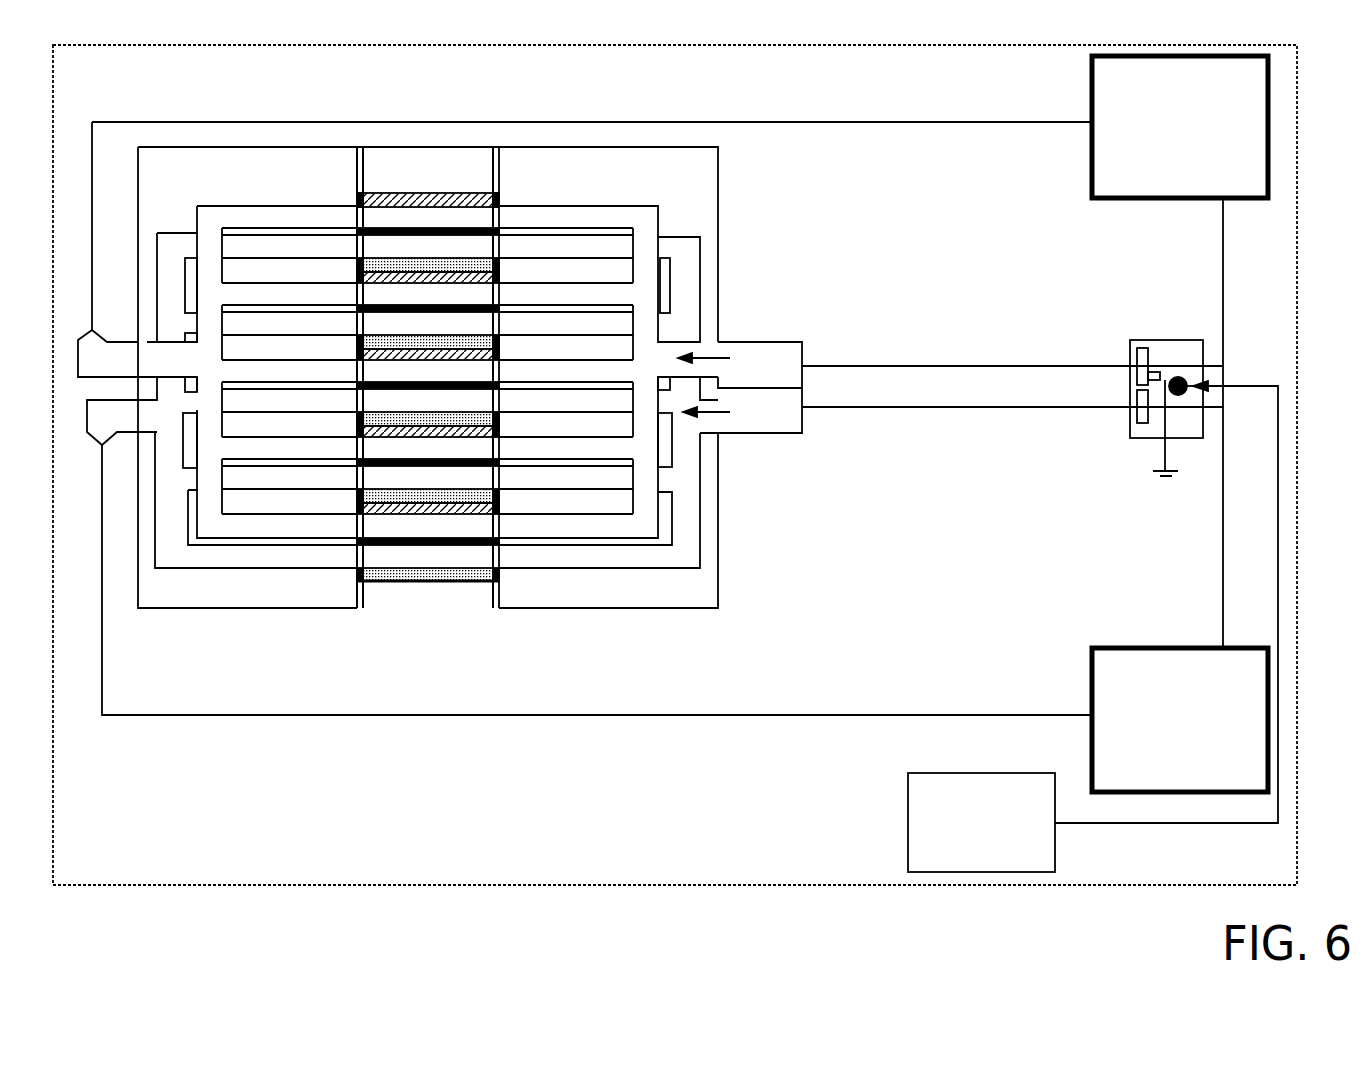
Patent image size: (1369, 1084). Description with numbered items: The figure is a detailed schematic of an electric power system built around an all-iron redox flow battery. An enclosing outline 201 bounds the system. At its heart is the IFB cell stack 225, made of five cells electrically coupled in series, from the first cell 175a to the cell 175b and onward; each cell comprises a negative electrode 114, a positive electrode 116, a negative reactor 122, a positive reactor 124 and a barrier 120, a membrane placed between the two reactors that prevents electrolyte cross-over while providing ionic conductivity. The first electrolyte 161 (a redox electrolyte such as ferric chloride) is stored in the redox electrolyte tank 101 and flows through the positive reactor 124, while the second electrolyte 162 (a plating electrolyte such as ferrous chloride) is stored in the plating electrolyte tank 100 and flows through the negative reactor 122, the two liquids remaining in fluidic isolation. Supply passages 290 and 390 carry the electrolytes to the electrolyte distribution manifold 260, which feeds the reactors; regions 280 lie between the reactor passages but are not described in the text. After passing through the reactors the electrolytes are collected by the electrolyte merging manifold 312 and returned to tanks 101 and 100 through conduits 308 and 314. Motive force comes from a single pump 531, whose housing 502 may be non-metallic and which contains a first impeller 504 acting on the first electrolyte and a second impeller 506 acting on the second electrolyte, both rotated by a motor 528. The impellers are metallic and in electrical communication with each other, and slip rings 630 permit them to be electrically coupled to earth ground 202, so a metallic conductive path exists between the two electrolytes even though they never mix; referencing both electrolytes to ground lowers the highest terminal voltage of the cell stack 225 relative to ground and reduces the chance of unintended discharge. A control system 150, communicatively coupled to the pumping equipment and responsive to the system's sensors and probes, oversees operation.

The plating electrolyte tank 100 is at (1180, 720).
The redox electrolyte tank 101 is at (1180, 127).
The negative electrode 114 is at (354, 261).
The positive electrode 116 is at (415, 193).
The barrier 120 is at (505, 198).
The negative reactor 122 is at (428, 400).
The positive reactor 124 is at (434, 376).
The control system 150 is at (908, 778).
The first electrolyte 161 is at (748, 352).
The second electrolyte 162 is at (775, 416).
The first cell 175a is at (398, 611).
The IFB cell 175b is at (340, 192).
The enclosure 201 is at (420, 880).
The earth ground 202 is at (1157, 478).
The IFB cell stack 225 is at (418, 132).
The electrolyte distribution manifold 260 is at (703, 172).
The spacer 280 is at (575, 409).
The passage 290 is at (618, 210).
The conduit 308 is at (545, 119).
The electrolyte merging manifold 312 is at (210, 596).
The conduit 314 is at (237, 718).
The passage 390 is at (950, 451).
The housing 502 is at (1132, 341).
The first impeller 504 is at (1137, 357).
The second impeller 506 is at (1138, 417).
The motor 528 is at (1176, 375).
The pump 531 is at (1177, 432).
The slip rings 630 is at (1170, 366).